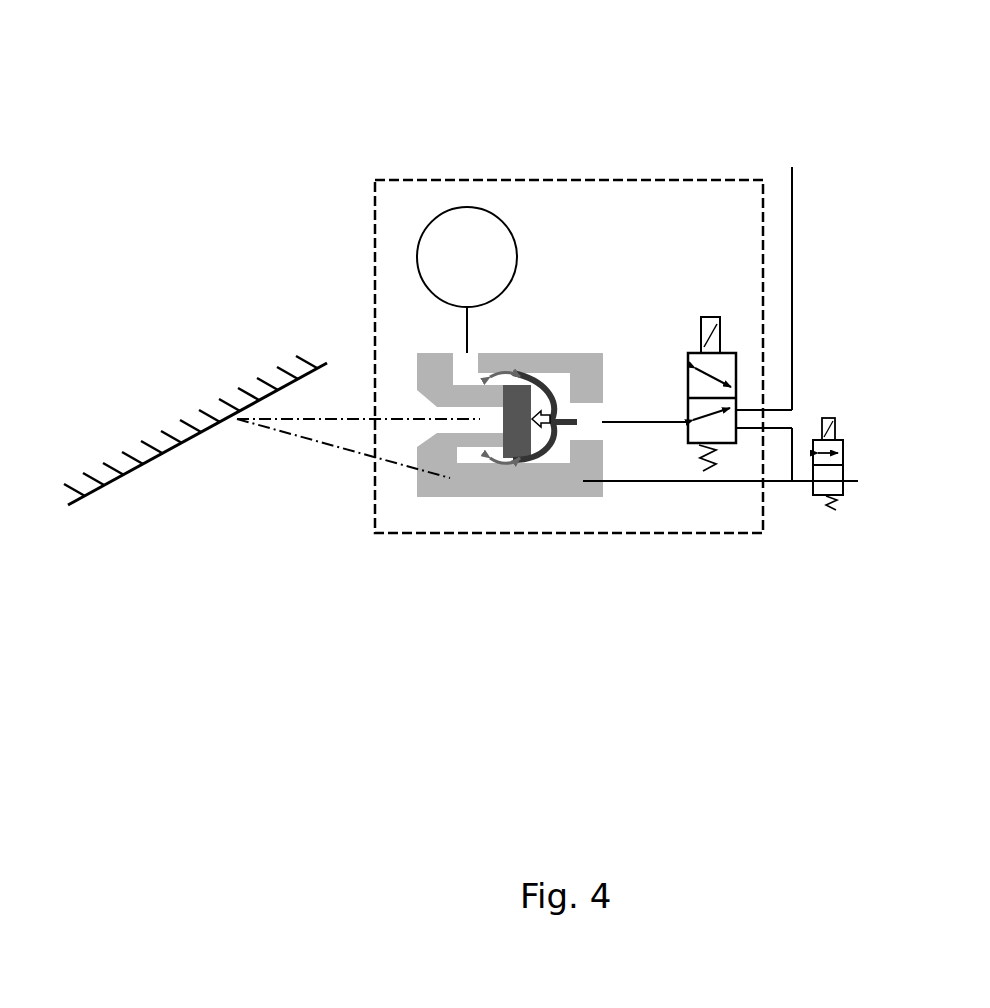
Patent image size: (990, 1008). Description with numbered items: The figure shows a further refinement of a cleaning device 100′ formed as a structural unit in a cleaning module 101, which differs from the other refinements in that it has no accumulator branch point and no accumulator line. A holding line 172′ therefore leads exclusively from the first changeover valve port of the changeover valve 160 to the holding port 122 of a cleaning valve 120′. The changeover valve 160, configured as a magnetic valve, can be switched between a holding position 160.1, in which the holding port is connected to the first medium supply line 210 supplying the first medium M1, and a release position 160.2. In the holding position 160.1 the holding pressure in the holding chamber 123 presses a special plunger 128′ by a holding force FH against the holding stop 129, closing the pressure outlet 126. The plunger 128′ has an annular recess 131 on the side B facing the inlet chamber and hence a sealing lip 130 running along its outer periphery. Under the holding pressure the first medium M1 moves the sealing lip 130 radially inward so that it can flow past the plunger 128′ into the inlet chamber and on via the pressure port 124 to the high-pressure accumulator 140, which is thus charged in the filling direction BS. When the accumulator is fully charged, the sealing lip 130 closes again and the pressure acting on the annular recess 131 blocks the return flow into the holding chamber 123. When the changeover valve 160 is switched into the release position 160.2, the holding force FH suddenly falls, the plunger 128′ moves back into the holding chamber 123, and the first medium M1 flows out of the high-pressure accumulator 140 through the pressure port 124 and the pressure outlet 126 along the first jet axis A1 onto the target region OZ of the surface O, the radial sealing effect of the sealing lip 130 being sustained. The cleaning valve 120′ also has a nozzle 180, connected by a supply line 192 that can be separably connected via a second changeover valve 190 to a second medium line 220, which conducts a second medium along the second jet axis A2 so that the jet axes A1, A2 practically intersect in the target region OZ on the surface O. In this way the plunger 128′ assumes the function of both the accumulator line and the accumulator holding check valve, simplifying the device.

The cleaning device 100′ is at (731, 91).
The cleaning module 101 is at (722, 178).
The cleaning valve 120′ is at (437, 507).
The holding port 122 is at (603, 424).
The holding chamber 123 is at (565, 457).
The pressure port 124 is at (448, 347).
The pressure outlet 126 is at (502, 395).
The plunger 128′ is at (527, 457).
The holding stop 129 is at (498, 437).
The sealing lip 130 is at (511, 375).
The annular recess 131 is at (583, 375).
The high-pressure accumulator 140 is at (435, 250).
The changeover valve 160 is at (741, 335).
The holding position 160.1 is at (728, 422).
The release position 160.2 is at (728, 369).
The holding line 172′ is at (668, 420).
The nozzle 180 is at (402, 472).
The second changeover valve 190 is at (827, 510).
The supply line 192 is at (630, 482).
The first medium supply line 210 is at (793, 224).
The second medium line 220 is at (857, 482).
The filling direction BS is at (569, 335).
The side facing the inlet chamber B is at (430, 405).
The first jet axis A1 is at (353, 419).
The second jet axis A2 is at (363, 453).
The target region OZ is at (233, 427).
The surface O is at (142, 465).
The holding force FH is at (544, 430).
The first medium M1 is at (552, 448).